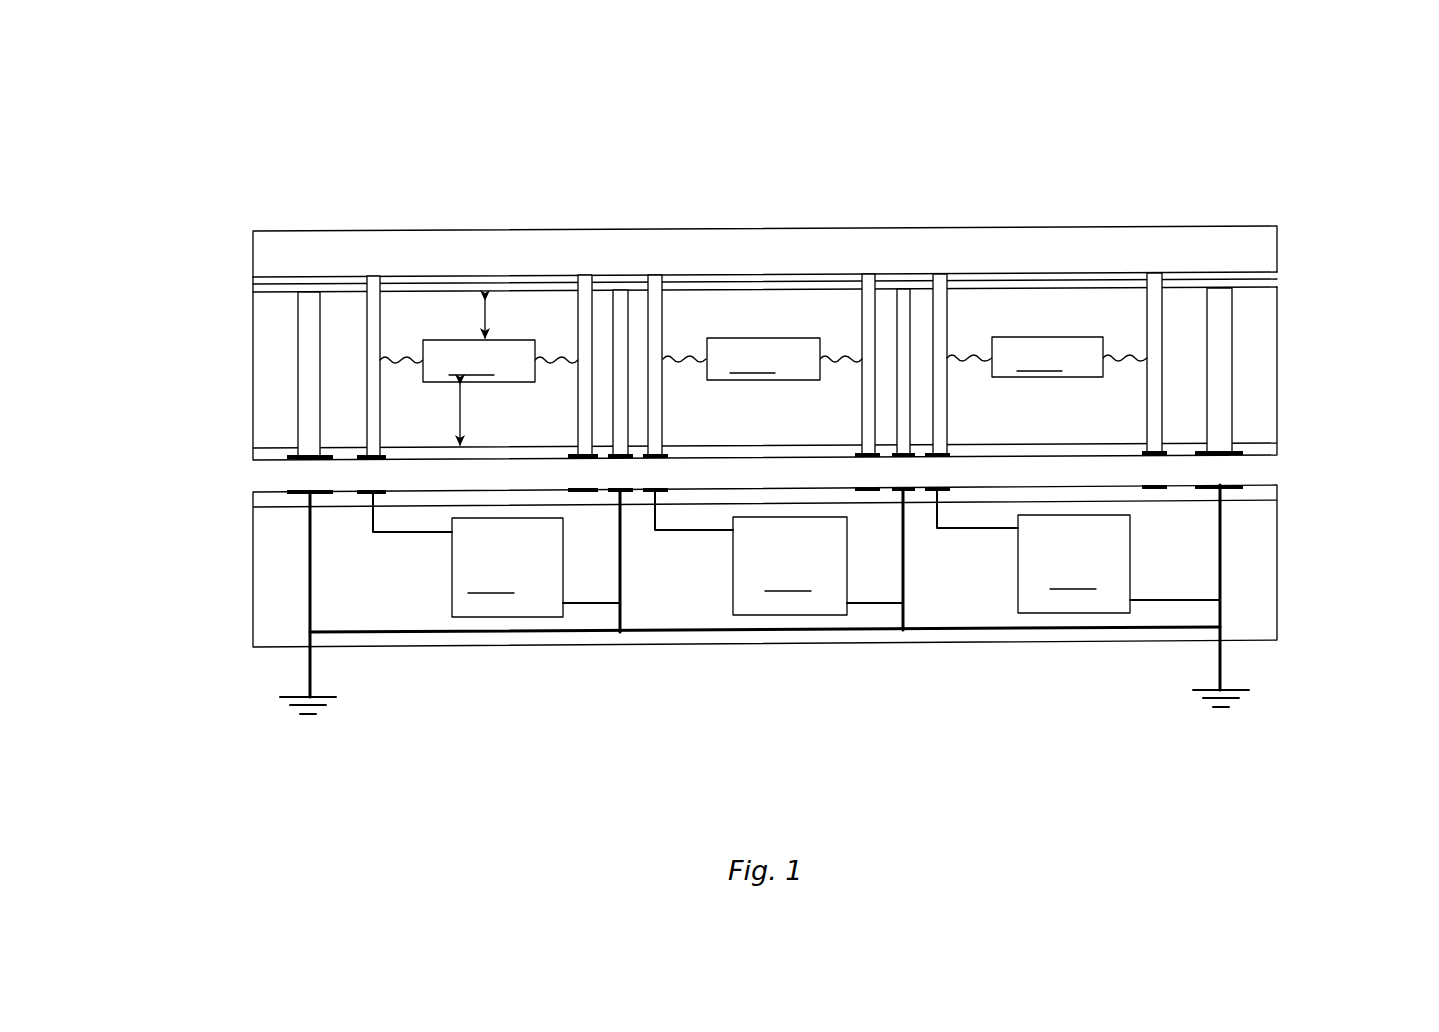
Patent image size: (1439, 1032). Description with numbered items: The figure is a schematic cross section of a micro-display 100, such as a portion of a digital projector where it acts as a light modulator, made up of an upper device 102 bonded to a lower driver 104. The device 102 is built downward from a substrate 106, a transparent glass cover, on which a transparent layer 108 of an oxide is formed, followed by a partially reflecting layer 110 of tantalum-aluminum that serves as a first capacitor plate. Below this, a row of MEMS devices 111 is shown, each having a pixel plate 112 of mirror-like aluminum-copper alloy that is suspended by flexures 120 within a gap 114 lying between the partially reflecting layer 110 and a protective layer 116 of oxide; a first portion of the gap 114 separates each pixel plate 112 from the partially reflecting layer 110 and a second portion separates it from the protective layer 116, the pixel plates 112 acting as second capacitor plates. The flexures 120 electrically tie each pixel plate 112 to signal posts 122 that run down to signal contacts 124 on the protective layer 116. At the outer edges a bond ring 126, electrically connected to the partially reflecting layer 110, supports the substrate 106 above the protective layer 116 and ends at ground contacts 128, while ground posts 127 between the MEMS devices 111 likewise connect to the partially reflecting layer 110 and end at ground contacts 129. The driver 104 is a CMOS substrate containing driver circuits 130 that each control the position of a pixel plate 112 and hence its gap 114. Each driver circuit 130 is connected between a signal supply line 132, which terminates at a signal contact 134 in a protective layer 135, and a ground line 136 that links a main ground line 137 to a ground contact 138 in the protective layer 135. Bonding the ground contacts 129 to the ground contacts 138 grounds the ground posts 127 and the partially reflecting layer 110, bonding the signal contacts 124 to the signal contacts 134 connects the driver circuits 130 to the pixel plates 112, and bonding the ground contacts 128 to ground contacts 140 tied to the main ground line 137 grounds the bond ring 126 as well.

The micro-display 100 is at (1274, 120).
The device 102 is at (1320, 345).
The driver 104 is at (1327, 561).
The substrate 106 is at (1269, 250).
The transparent layer 108 is at (252, 281).
The partially reflecting layer 110 is at (252, 290).
The micro-electromechanical system (MEMS) devices 111 is at (660, 309).
The pixel plates 112 is at (763, 359).
The gap 114 is at (415, 320).
The protective layer 116 is at (1269, 451).
The flexures 120 is at (678, 355).
The signal posts 122 is at (371, 288).
The signal contacts 124 is at (374, 461).
The bond ring 126 is at (308, 350).
The ground posts 127 is at (620, 300).
The ground contacts 128 is at (296, 461).
The ground contacts 129 is at (652, 462).
The driver circuits 130 is at (791, 566).
The signal supply line 132 is at (688, 534).
The signal contact 134 is at (651, 495).
The protective layer 135 is at (256, 499).
The ground line 136 is at (905, 612).
The main ground line 137 is at (384, 634).
The ground contact 138 is at (905, 489).
The ground contacts 140 is at (290, 490).